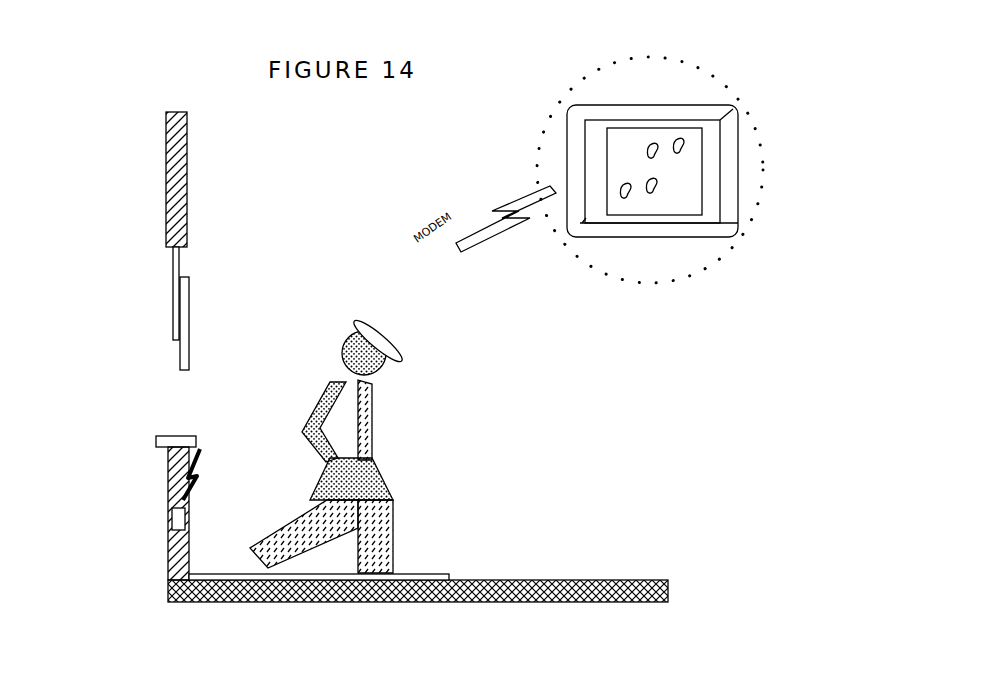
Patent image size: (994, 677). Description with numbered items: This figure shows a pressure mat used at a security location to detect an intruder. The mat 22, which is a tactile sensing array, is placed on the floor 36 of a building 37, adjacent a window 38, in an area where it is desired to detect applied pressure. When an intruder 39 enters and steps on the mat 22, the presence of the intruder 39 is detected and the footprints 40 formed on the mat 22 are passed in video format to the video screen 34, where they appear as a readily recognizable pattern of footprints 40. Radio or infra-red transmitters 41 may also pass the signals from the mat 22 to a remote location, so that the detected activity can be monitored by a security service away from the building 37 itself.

The mat 22 is at (428, 577).
The video screen 34 is at (715, 147).
The floor 36 is at (627, 578).
The building 37 is at (303, 253).
The window 38 is at (190, 388).
The intruder 39 is at (383, 447).
The footprints 40 is at (657, 188).
The transmitters 41 is at (167, 522).